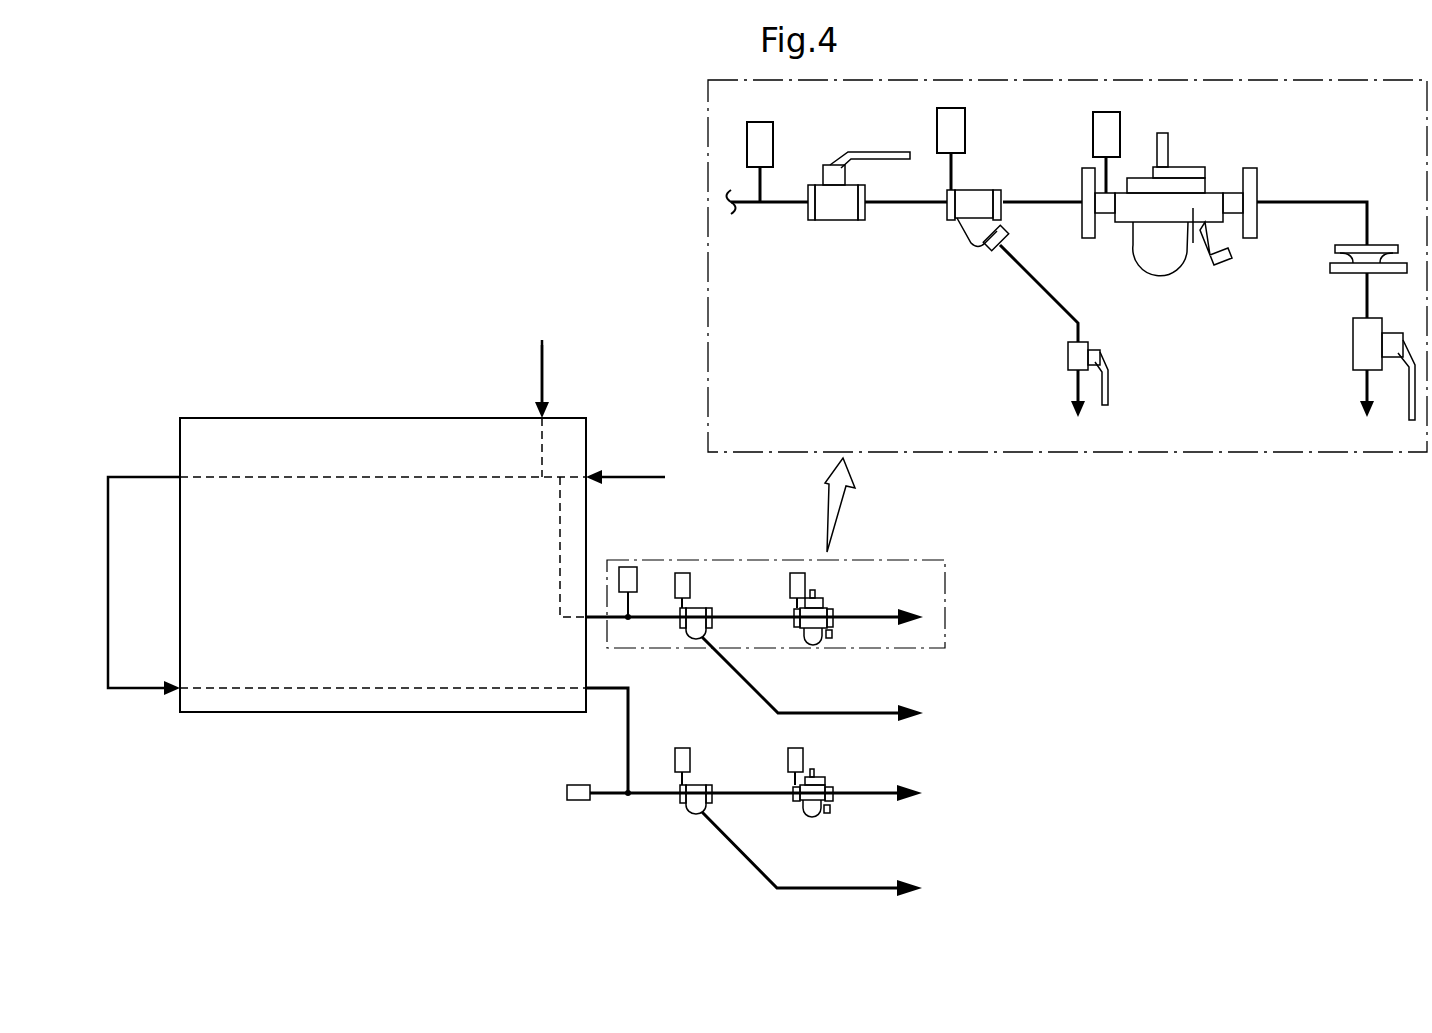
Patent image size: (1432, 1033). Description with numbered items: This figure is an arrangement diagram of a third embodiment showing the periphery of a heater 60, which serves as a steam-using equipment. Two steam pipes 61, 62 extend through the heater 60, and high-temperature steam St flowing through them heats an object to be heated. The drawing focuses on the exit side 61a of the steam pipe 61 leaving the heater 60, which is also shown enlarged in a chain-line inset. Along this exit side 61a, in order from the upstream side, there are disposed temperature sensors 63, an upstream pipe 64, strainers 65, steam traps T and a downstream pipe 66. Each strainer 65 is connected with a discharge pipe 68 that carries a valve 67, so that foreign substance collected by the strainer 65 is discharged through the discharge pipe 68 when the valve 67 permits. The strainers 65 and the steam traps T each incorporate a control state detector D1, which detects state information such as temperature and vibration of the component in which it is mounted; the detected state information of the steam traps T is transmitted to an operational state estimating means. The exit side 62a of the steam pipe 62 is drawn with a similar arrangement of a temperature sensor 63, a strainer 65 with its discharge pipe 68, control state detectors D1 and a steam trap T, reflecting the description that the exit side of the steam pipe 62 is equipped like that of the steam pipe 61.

The heater 60 is at (383, 418).
The steam pipe 61 is at (620, 477).
The steam pipe 62 is at (545, 377).
The exit side of the steam pipe 61a is at (893, 615).
The second steam outlet line 62a is at (878, 791).
The temperature sensor 63 is at (628, 566).
The upstream pipe 64 is at (835, 221).
The strainer 65 is at (690, 632).
The downstream pipe 66 is at (1351, 345).
The valve 67 is at (1110, 356).
The discharge pipe 68 is at (803, 713).
The control state detector D1 is at (790, 588).
The steam trap T is at (822, 610).
The steam St is at (614, 404).